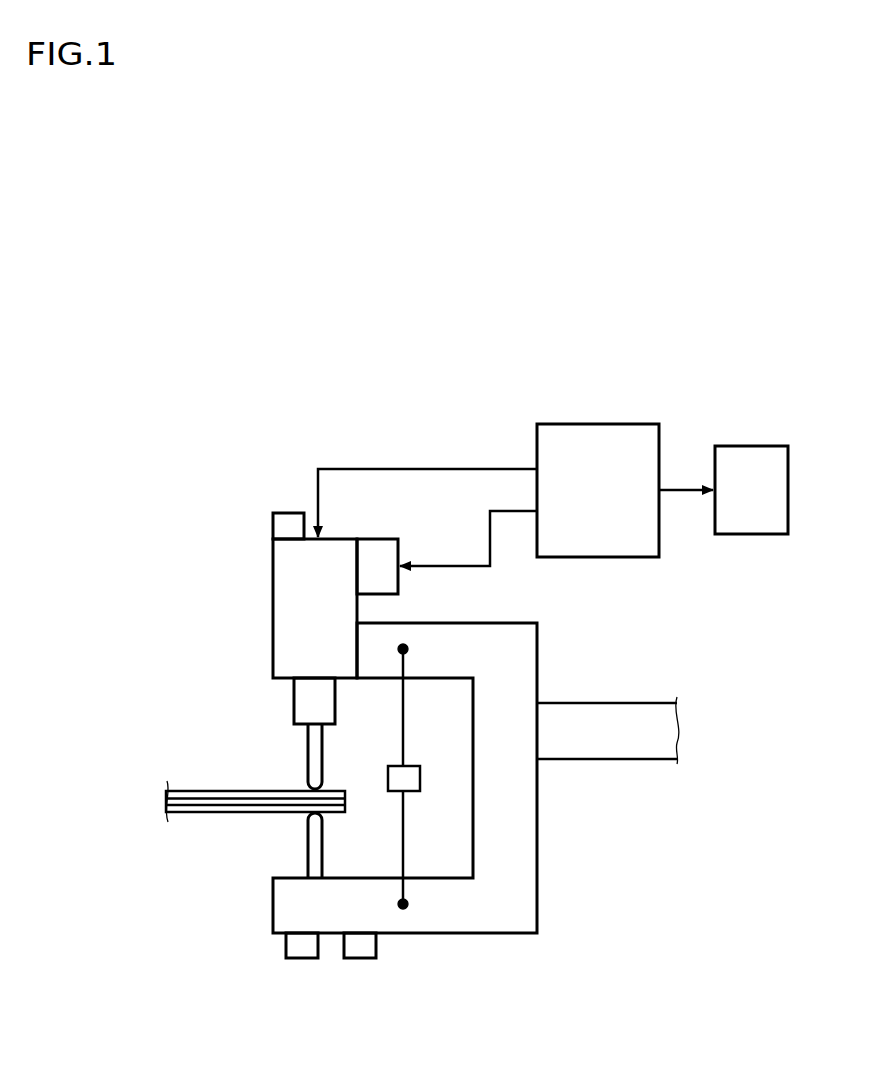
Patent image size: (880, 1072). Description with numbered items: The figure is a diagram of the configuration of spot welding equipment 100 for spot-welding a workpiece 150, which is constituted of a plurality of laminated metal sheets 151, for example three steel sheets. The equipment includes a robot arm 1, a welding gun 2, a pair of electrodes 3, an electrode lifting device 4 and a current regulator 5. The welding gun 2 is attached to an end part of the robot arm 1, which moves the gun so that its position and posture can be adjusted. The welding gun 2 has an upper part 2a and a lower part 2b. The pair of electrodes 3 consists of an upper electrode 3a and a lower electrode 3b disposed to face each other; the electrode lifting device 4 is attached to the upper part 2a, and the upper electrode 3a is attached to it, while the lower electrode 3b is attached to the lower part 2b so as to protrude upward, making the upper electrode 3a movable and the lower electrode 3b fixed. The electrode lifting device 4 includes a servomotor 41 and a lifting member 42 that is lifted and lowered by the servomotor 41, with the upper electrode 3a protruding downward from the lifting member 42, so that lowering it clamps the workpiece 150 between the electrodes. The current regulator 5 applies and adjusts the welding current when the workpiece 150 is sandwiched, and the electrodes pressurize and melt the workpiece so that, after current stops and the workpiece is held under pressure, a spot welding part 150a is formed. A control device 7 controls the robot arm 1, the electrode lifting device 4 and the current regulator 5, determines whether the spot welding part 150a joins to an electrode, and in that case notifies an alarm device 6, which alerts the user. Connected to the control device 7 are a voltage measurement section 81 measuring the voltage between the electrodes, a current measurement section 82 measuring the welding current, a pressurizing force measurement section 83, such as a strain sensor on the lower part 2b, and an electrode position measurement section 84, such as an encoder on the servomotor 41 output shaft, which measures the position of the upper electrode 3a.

The spot welding equipment 100 is at (348, 396).
The robot arm 1 is at (624, 718).
The welding gun 2 is at (436, 795).
The upper part 2a is at (428, 632).
The lower part 2b is at (432, 918).
The pair of electrodes 3 is at (264, 801).
The upper electrode 3a is at (308, 752).
The lower electrode 3b is at (308, 848).
The electrode lifting device 4 is at (275, 631).
The servomotor 41 is at (287, 628).
The lifting member 42 is at (303, 711).
The current regulator 5 is at (378, 555).
The alarm device 6 is at (752, 458).
The control device 7 is at (598, 445).
The voltage measurement section 81 is at (421, 780).
The current measurement section 82 is at (360, 950).
The pressurizing force measurement section 83 is at (302, 948).
The electrode position measurement section 84 is at (289, 527).
The workpiece 150 is at (252, 817).
The spot welding part 150a is at (332, 782).
The metal sheet 151 is at (190, 808).